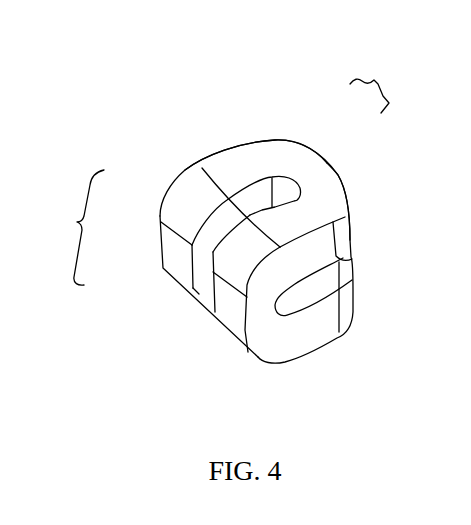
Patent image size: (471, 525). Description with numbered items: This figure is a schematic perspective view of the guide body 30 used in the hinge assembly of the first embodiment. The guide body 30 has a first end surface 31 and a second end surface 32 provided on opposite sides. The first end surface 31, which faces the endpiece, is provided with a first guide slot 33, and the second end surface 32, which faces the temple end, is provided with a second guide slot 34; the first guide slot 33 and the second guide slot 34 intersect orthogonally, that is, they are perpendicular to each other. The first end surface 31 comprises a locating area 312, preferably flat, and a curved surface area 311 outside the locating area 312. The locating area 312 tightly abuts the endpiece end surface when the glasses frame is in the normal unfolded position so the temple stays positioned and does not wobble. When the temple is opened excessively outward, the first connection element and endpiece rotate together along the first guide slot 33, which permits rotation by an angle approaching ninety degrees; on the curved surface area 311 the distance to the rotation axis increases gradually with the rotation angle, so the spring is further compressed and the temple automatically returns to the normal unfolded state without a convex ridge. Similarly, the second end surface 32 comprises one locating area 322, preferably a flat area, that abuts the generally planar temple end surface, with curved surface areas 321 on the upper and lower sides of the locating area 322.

The guide body 30 is at (213, 77).
The first end surface 31 is at (293, 201).
The curved surface area 311 is at (285, 141).
The locating area 312 is at (329, 163).
The second end surface 32 is at (196, 261).
The curved surface areas 321 is at (248, 247).
The locating area 322 is at (214, 316).
The first guide slot 33 is at (300, 292).
The second guide slot 34 is at (203, 291).